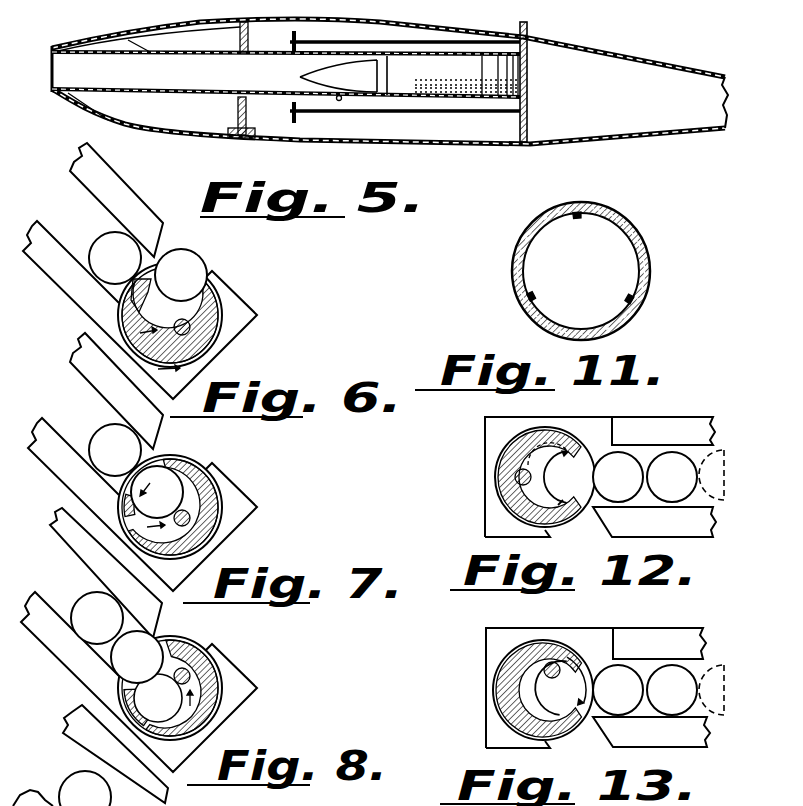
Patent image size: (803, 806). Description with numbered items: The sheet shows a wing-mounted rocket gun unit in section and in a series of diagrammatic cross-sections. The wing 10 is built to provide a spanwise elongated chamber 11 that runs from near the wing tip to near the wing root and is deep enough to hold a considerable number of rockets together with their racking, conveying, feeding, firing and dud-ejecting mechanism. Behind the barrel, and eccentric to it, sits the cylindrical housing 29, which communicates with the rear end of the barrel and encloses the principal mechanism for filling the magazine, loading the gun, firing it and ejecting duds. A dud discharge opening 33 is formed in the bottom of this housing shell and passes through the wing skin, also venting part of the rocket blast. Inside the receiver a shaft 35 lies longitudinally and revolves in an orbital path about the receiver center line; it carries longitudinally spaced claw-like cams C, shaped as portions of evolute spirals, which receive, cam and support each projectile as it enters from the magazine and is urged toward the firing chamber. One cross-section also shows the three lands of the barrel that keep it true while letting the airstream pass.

In FIG. 5, the wing 10 is at (347, 146).
In FIG. 6, the wing 10 is at (126, 182).
In FIG. 5, the spanwise elongated chamber 11 is at (265, 111).
In FIG. 6, the spanwise elongated chamber 11 is at (82, 230).
In FIG. 5, the cylindrical housing 29 is at (467, 118).
In FIG. 12, the dud discharge opening 33 is at (595, 506).
In FIG. 6, the shaft 35 is at (188, 320).
In FIG. 7, the shaft 35 is at (190, 515).
In FIG. 6, the cams C is at (157, 343).
In FIG. 7, the cams C is at (150, 535).
In FIG. 13, the cams C is at (570, 695).